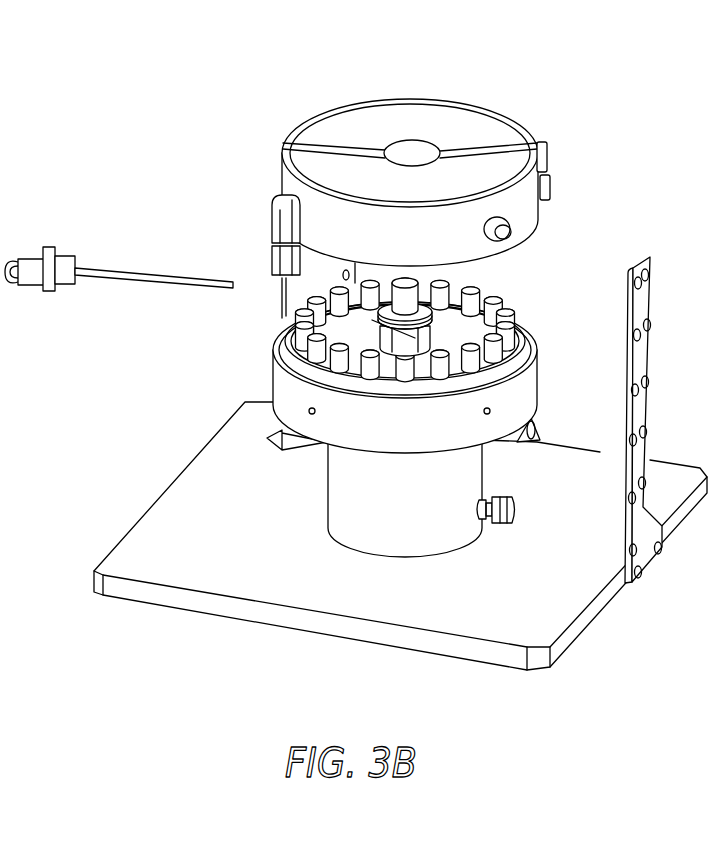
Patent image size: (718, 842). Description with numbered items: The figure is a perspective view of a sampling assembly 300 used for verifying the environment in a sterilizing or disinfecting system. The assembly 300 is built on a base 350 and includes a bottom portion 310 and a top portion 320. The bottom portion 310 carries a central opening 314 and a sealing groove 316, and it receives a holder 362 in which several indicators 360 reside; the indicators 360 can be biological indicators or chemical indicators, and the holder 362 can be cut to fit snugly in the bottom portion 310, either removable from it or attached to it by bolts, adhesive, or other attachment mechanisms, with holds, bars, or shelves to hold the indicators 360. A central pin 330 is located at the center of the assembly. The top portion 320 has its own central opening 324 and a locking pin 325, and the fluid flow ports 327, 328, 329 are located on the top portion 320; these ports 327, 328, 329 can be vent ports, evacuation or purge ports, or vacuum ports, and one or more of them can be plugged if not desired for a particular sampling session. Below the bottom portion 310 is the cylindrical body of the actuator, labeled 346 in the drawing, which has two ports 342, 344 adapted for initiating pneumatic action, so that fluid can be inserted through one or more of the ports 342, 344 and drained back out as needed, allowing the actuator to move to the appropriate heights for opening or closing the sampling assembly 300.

The sampling assembly 300 is at (632, 82).
The bottom portion 310 is at (540, 381).
The central opening 314 is at (434, 312).
The sealing groove 316 is at (528, 337).
The top portion 320 is at (498, 112).
The central opening 324 is at (411, 141).
The locking pin 325 is at (119, 271).
The fluid flow port 327 is at (272, 213).
The fluid flow port 328 is at (542, 142).
The fluid flow port 329 is at (512, 236).
The central pin 330 is at (296, 314).
The port 342 is at (534, 511).
The port 344 is at (539, 424).
The cylindrical housing 346 is at (405, 497).
The base 350 is at (104, 596).
The indicators 360 is at (400, 345).
The holder 362 is at (286, 348).